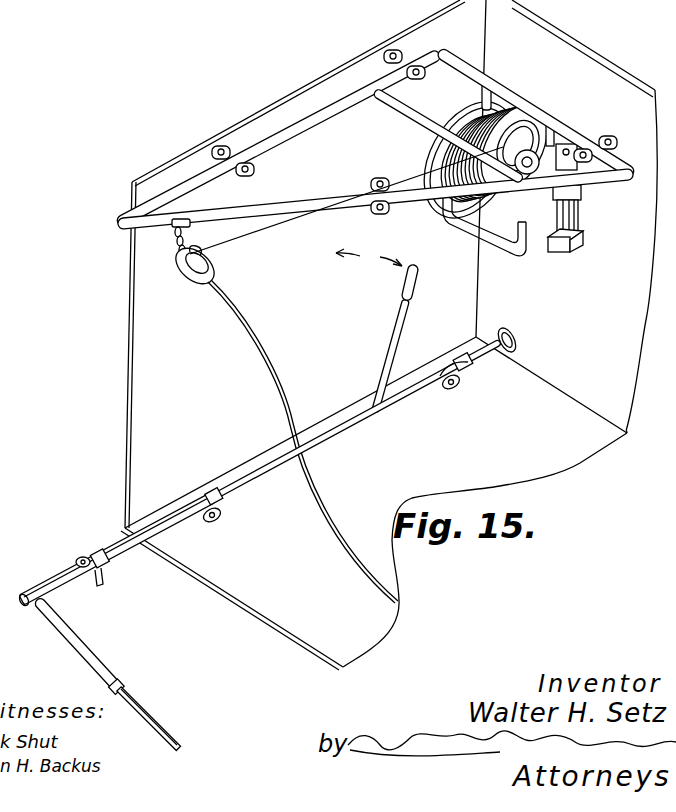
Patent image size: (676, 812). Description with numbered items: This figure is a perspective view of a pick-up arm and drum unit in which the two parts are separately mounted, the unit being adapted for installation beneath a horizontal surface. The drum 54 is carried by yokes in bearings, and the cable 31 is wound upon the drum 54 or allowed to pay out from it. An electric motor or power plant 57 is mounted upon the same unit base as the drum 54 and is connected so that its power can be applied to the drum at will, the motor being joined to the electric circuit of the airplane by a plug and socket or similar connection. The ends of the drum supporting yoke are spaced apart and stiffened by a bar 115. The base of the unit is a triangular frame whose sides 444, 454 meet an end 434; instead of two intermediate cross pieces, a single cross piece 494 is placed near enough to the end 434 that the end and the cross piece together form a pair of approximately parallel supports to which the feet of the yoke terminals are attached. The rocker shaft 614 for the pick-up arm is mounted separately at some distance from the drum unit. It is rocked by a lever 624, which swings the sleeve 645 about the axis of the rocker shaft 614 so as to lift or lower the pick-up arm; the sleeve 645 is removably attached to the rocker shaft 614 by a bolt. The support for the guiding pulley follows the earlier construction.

The side of triangular base 454 is at (319, 118).
The cross piece 494 is at (402, 117).
The drum 54 is at (430, 155).
The end of triangular base 434 is at (521, 104).
The electric motor or power plant 57 is at (575, 215).
The bar 115 is at (497, 248).
The side of triangular base 444 is at (346, 201).
The lever 624 is at (404, 326).
The rocker shaft 614 is at (350, 430).
The cable 31 is at (328, 523).
The sleeve 645 is at (98, 656).